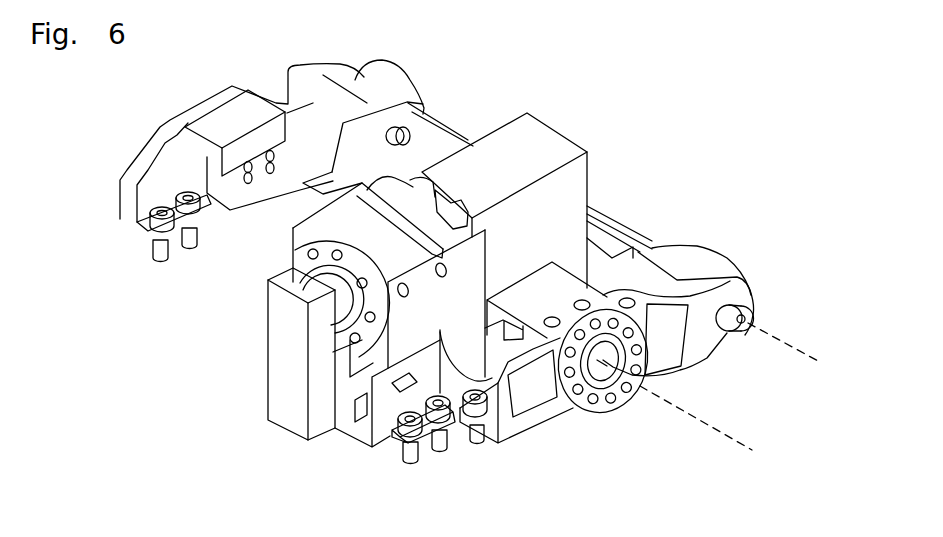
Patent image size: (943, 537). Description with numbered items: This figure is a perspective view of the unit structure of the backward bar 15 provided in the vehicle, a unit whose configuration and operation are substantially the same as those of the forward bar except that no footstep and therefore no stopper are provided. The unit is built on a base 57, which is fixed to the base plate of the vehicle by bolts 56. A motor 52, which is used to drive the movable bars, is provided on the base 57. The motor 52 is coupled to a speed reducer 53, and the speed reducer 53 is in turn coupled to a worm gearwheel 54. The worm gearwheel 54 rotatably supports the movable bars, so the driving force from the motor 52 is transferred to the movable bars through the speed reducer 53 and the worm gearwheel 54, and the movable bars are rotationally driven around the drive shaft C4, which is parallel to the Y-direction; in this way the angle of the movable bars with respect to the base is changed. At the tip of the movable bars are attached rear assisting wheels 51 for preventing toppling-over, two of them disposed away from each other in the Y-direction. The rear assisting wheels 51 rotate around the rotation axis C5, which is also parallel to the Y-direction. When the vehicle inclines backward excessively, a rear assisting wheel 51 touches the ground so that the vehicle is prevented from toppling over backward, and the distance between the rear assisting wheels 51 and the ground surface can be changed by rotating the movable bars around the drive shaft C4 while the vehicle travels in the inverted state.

The backward bar 15 is at (92, 139).
The rear assisting wheels 51 is at (388, 88).
The motor 52 is at (352, 395).
The speed reducer 53 is at (406, 200).
The worm gearwheel 54 is at (530, 155).
The bolts 56 is at (160, 259).
The base 57 is at (382, 428).
The drive shaft C4 is at (710, 427).
The rotation axis C5 is at (780, 338).